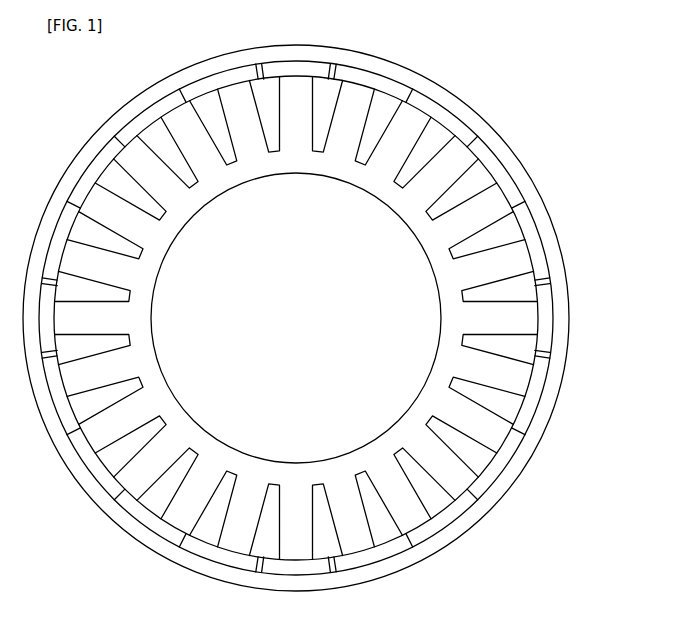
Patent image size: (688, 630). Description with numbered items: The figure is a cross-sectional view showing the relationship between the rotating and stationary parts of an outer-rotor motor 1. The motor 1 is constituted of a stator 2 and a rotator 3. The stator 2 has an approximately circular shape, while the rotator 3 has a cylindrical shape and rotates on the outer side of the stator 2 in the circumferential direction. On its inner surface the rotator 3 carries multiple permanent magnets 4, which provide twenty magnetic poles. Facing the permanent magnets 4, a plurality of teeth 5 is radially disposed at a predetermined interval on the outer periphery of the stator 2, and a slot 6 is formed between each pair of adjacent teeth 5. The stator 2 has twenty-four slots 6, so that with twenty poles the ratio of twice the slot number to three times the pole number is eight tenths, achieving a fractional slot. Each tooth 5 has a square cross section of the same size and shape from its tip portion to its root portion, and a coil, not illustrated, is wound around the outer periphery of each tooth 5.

The outer-rotor motor 1 is at (443, 85).
The stator 2 is at (410, 203).
The rotator 3 is at (560, 270).
The permanent magnet 4 is at (548, 252).
The tooth 5 is at (482, 215).
The slot 6 is at (496, 236).